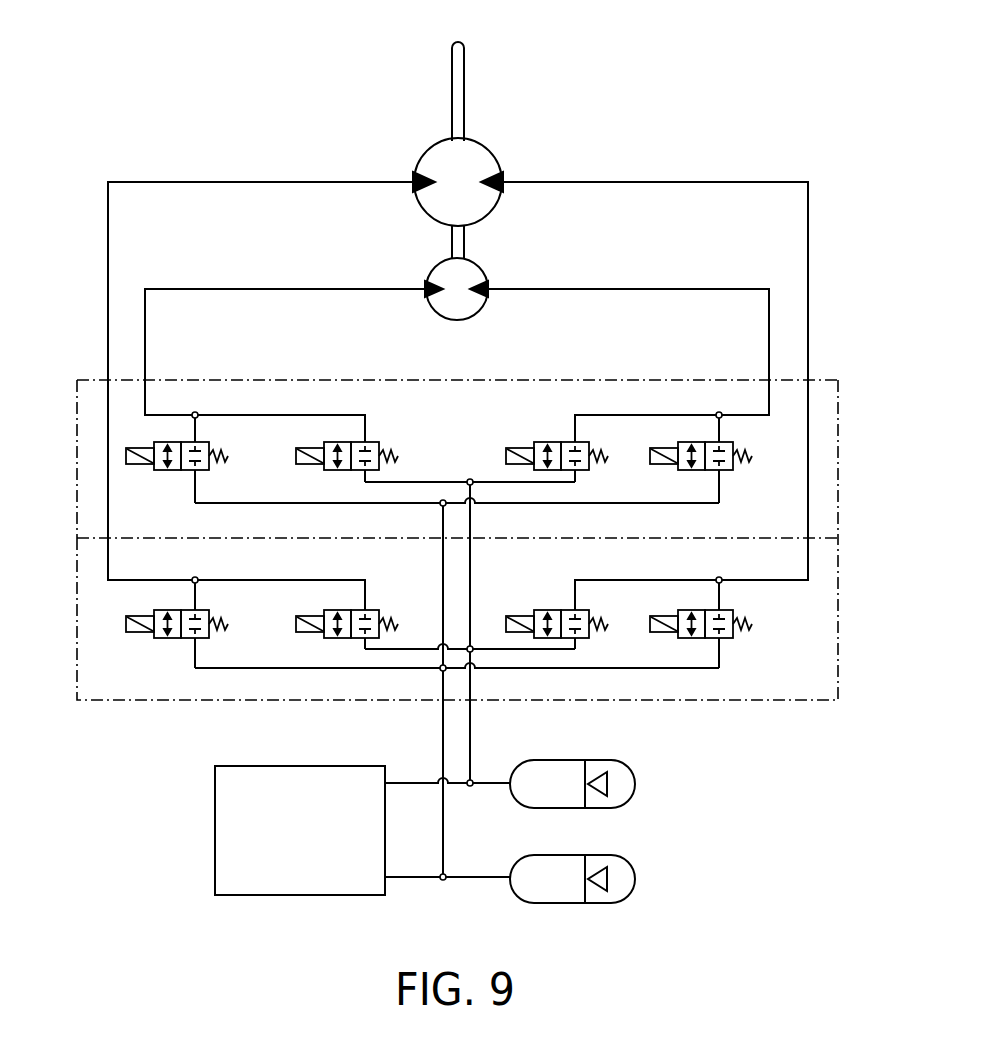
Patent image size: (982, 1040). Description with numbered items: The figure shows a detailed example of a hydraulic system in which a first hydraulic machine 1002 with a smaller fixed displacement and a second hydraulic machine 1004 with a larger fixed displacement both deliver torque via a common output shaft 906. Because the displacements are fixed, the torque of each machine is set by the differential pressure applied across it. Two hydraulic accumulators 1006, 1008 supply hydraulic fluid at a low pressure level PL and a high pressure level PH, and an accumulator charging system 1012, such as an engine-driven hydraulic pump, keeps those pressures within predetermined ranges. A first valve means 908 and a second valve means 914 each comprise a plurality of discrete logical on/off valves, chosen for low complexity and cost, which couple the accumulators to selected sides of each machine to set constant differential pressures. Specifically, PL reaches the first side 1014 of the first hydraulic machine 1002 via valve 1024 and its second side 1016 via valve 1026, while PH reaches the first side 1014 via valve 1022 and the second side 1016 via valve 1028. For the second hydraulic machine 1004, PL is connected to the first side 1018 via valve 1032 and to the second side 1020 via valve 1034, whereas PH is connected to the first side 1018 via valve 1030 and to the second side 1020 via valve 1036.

The common output shaft 906 is at (461, 78).
The second hydraulic machine 1004 is at (490, 148).
The first hydraulic machine 1002 is at (485, 264).
The first side of the second hydraulic machine 1018 is at (413, 182).
The second side of the second hydraulic machine 1020 is at (500, 182).
The first side of the first hydraulic machine 1014 is at (427, 289).
The second side of the first hydraulic machine 1016 is at (488, 289).
The first valve means 908 is at (660, 370).
The second valve means 914 is at (766, 703).
The valve 1022 is at (210, 443).
The valve 1024 is at (373, 442).
The valve 1026 is at (540, 440).
The valve 1028 is at (730, 443).
The valve 1030 is at (212, 610).
The valve 1032 is at (372, 608).
The valve 1034 is at (547, 608).
The valve 1036 is at (737, 608).
The hydraulic accumulator 1006 is at (636, 783).
The hydraulic accumulator 1008 is at (640, 876).
The accumulator charging system 1012 is at (215, 830).